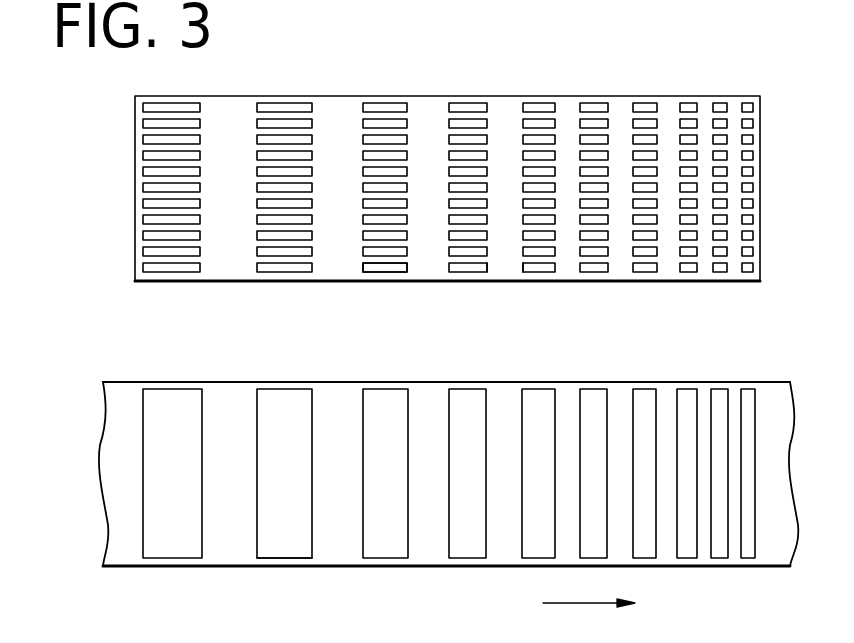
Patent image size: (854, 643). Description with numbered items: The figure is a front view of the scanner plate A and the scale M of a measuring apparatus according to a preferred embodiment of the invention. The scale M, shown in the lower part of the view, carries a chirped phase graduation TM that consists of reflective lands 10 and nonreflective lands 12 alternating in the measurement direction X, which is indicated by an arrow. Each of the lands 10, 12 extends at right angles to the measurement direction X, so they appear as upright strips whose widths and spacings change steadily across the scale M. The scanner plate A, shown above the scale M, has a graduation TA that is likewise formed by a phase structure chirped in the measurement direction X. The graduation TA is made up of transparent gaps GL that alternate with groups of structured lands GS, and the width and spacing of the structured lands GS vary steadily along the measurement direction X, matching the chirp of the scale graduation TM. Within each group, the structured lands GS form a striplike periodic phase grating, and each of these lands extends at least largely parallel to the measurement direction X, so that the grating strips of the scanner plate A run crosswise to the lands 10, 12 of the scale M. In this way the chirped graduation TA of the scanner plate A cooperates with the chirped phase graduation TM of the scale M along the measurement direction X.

The scanner plate A is at (333, 269).
The graduation TA is at (505, 122).
The structured lands GS is at (408, 291).
The transparent gaps GL is at (486, 281).
The scale M is at (435, 397).
The reflective lands 10 is at (226, 540).
The nonreflective lands 12 is at (283, 532).
The chirped phase graduation TM is at (327, 550).
The measurement direction X is at (589, 618).